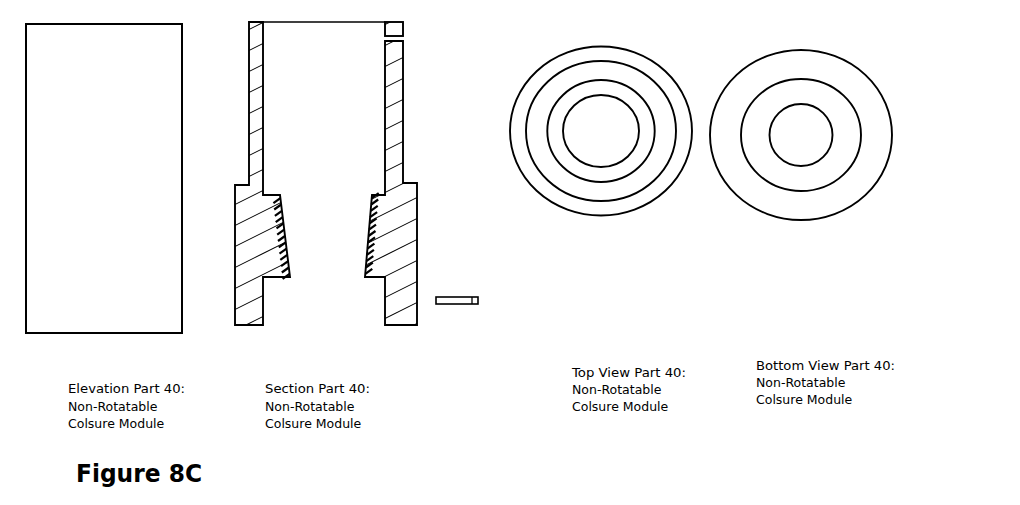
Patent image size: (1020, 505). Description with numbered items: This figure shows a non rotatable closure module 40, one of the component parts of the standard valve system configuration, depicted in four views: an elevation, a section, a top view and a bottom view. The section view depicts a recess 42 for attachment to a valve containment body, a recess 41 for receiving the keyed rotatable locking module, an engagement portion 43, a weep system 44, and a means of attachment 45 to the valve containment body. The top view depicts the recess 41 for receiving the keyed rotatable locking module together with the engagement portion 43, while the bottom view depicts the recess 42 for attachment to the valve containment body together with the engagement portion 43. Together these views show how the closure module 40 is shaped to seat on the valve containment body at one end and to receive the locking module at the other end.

The non rotatable closure module 40 is at (403, 100).
The recess for receiving the keyed rotatable locking module 41 is at (558, 152).
The recess for attachment to a valve containment body 42 is at (776, 98).
The engagement portion 43 is at (375, 233).
The weep system 44 is at (403, 40).
The means of attachment 45 is at (478, 300).